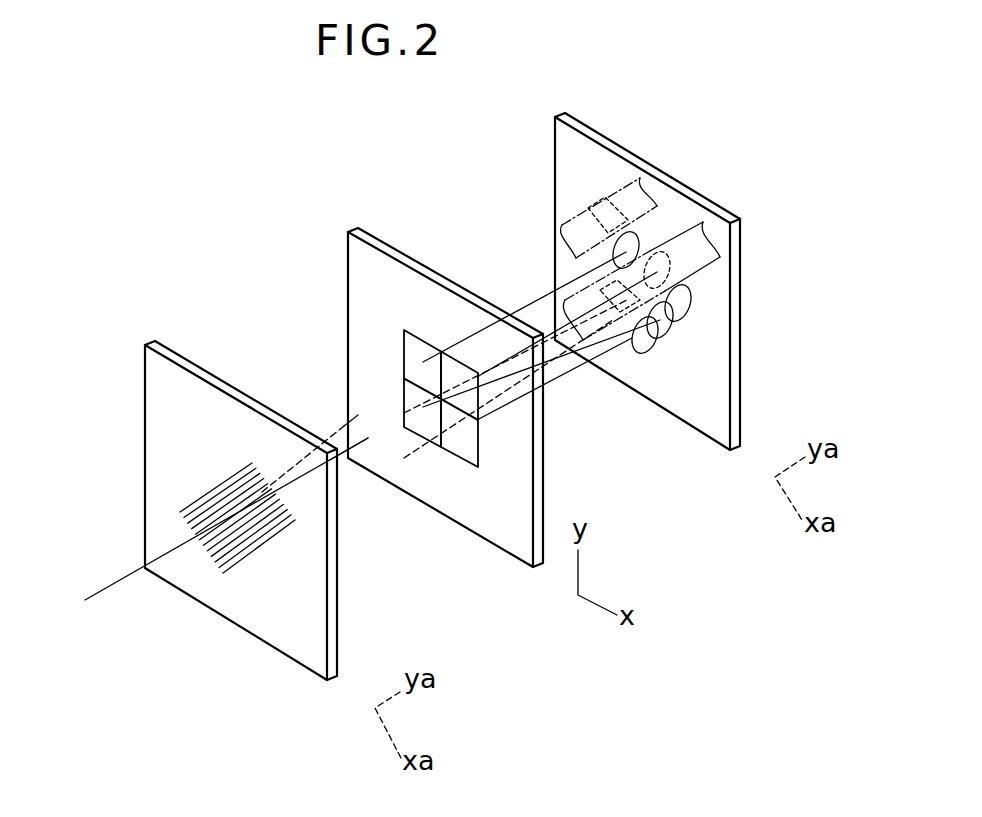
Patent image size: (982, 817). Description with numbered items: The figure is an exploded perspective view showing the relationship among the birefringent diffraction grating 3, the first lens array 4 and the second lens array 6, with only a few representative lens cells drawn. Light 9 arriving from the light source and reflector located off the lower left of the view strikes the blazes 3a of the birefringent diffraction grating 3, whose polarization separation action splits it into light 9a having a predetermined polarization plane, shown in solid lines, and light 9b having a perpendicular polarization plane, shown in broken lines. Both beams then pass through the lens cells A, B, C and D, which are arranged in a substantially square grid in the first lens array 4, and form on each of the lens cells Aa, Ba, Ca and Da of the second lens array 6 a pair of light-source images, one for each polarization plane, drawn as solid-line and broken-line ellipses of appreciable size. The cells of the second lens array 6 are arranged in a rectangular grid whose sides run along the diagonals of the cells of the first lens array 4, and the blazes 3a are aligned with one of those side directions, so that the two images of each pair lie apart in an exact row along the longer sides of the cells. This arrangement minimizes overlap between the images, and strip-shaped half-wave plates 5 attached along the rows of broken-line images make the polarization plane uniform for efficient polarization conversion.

The birefringent diffraction grating 3 is at (217, 377).
The blazes 3a is at (233, 590).
The first lens array 4 is at (348, 280).
The strip-shaped half-wave plates 5 is at (658, 198).
The second lens array 6 is at (743, 325).
The light 9 is at (128, 577).
The light having a predetermined polarization plane 9a is at (354, 447).
The light having a perpendicular polarization plane 9b is at (333, 436).
The lens cell A is at (463, 460).
The lens cell B is at (460, 357).
The lens cell C is at (417, 335).
The lens cell D is at (422, 433).
The lens cell Aa is at (672, 343).
The lens cell Ba is at (687, 290).
The lens cell Ca is at (618, 207).
The lens cell Da is at (643, 353).